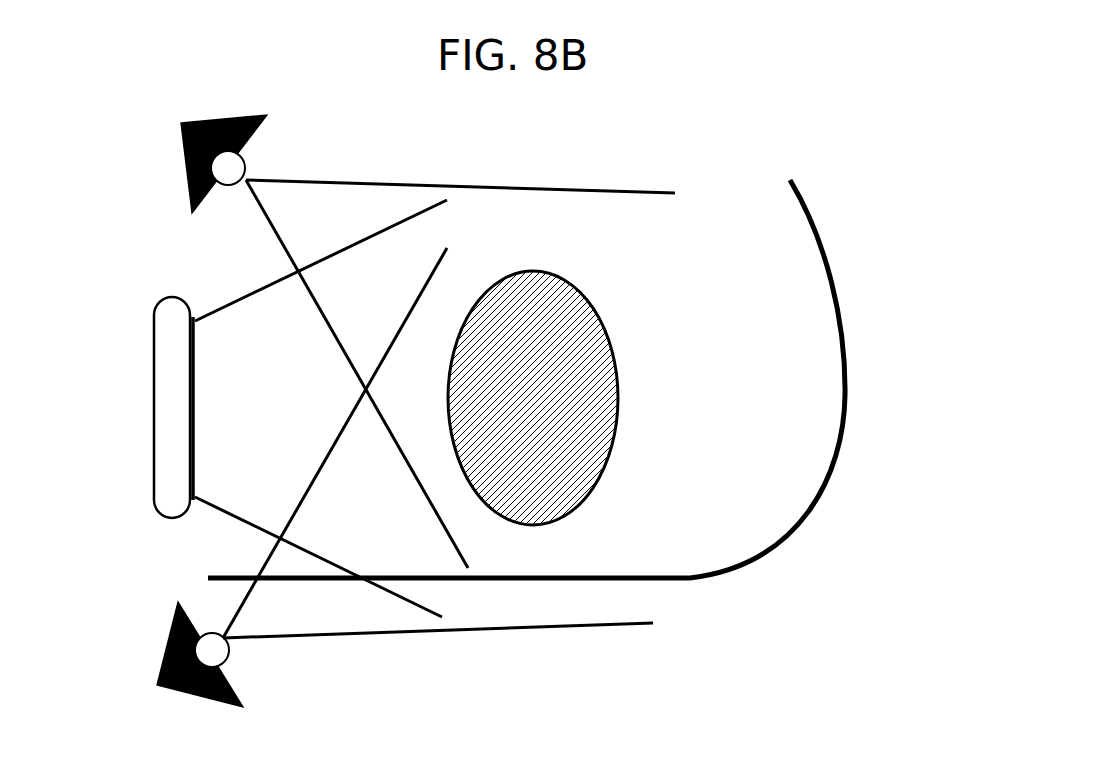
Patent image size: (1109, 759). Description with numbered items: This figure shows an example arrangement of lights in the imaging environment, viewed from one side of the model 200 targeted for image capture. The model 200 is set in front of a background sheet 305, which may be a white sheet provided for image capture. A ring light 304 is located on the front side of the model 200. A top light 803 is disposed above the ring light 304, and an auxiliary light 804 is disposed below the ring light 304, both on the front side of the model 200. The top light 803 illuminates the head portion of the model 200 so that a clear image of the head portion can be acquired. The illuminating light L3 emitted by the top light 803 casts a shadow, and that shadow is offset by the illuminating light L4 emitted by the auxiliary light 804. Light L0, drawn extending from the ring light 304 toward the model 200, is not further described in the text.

The top light 803 is at (187, 165).
The auxiliary light 804 is at (165, 663).
The ring light 304 is at (155, 405).
The background sheet 305 is at (830, 288).
The model 200 is at (557, 292).
The light ray L0 is at (275, 278).
The illuminating light L3 is at (562, 187).
The illuminating light L4 is at (320, 470).